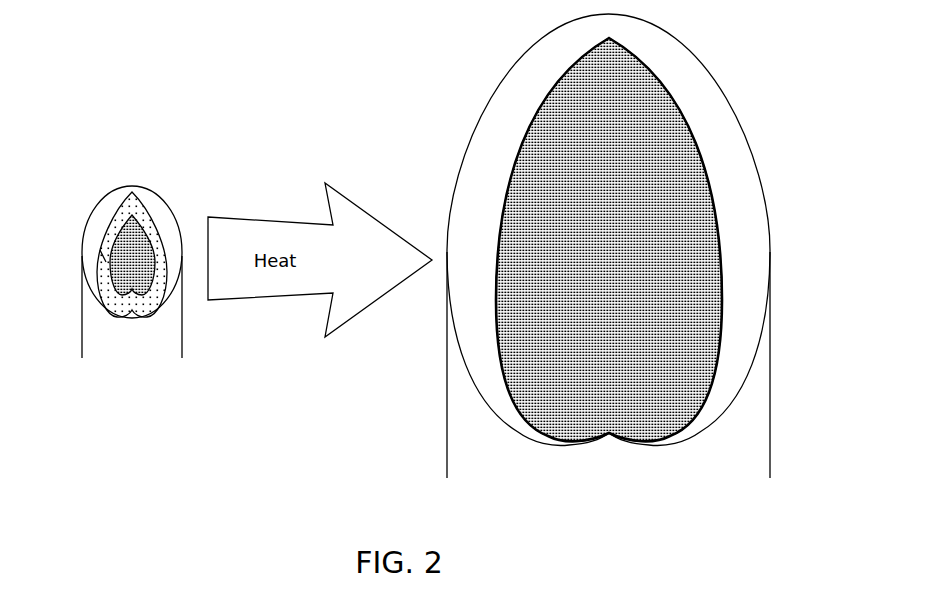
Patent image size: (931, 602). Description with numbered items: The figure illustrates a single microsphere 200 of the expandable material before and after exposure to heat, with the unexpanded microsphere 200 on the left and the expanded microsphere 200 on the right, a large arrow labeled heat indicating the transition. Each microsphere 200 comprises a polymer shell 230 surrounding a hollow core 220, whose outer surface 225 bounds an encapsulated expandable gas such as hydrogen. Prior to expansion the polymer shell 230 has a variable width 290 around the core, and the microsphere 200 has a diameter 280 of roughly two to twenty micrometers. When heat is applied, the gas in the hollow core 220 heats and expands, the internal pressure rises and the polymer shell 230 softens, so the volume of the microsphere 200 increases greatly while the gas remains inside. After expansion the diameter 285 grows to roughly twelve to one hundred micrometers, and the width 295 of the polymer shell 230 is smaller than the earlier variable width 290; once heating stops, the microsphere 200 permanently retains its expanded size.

The microsphere 200 is at (131, 425).
The hollow core 220 is at (138, 266).
The outer surface 225 is at (107, 242).
The polymer shell 230 is at (166, 297).
The diameter 280 is at (82, 345).
The diameter 285 is at (770, 472).
The variable width 290 is at (102, 256).
The width 295 is at (514, 153).